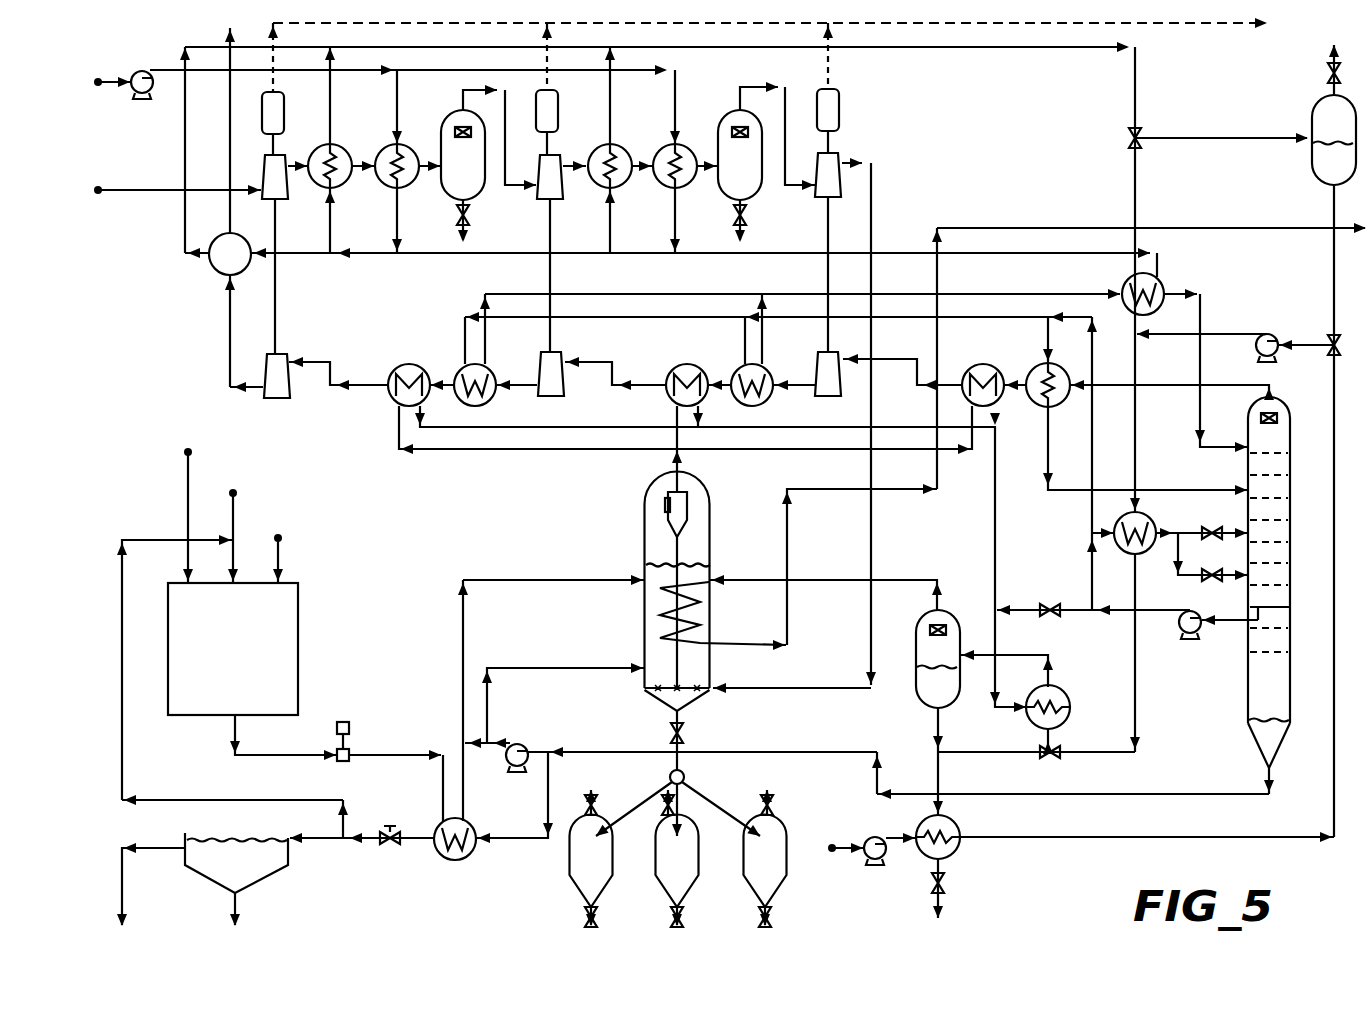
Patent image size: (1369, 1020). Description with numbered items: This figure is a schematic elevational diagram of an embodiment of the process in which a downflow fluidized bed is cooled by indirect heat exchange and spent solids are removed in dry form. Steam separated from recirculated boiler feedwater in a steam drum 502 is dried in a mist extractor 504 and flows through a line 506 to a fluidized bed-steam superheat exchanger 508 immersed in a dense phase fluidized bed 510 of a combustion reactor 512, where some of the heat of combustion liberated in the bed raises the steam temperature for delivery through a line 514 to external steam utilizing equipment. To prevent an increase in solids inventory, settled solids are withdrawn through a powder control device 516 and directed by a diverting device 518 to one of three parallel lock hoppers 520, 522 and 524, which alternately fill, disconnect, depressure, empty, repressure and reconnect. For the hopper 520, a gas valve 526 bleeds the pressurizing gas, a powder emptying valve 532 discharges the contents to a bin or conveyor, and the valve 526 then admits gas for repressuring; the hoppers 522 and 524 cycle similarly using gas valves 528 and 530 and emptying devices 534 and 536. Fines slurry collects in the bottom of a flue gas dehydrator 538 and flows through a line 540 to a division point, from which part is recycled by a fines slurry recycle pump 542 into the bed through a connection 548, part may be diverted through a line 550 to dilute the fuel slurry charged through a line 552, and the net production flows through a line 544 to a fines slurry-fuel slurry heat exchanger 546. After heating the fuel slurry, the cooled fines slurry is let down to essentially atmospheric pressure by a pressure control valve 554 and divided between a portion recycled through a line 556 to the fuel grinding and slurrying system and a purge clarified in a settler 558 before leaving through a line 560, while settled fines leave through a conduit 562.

The steam drum 502 is at (917, 695).
The mist extractor 504 is at (942, 626).
The line 506 is at (758, 578).
The fluidized bed-steam superheat exchanger 508 is at (697, 607).
The dense phase fluidized bed 510 is at (683, 660).
The combustion reactor 512 is at (645, 532).
The line 514 is at (828, 494).
The powder control device 516 is at (687, 731).
The diverting device 518 is at (686, 777).
The lock hopper 520 is at (613, 857).
The lock hopper 522 is at (665, 892).
The lock hopper 524 is at (740, 862).
The gas valve 526 is at (578, 805).
The gas valve 528 is at (660, 805).
The gas valve 530 is at (780, 810).
The powder emptying valve 532 is at (585, 917).
The emptying device 534 is at (687, 917).
The emptying device 536 is at (775, 917).
The flue gas dehydrator 538 is at (1248, 715).
The line 540 is at (1126, 793).
The fines slurry recycle pump 542 is at (522, 745).
The line 544 is at (512, 840).
The fines slurry-fuel slurry heat exchanger 546 is at (455, 862).
The connection 548 is at (603, 670).
The line 550 is at (467, 745).
The line 552 is at (566, 583).
The pressure control valve 554 is at (390, 850).
The line 556 is at (180, 800).
The settler 558 is at (285, 869).
The line 560 is at (125, 886).
The conduit 562 is at (240, 905).